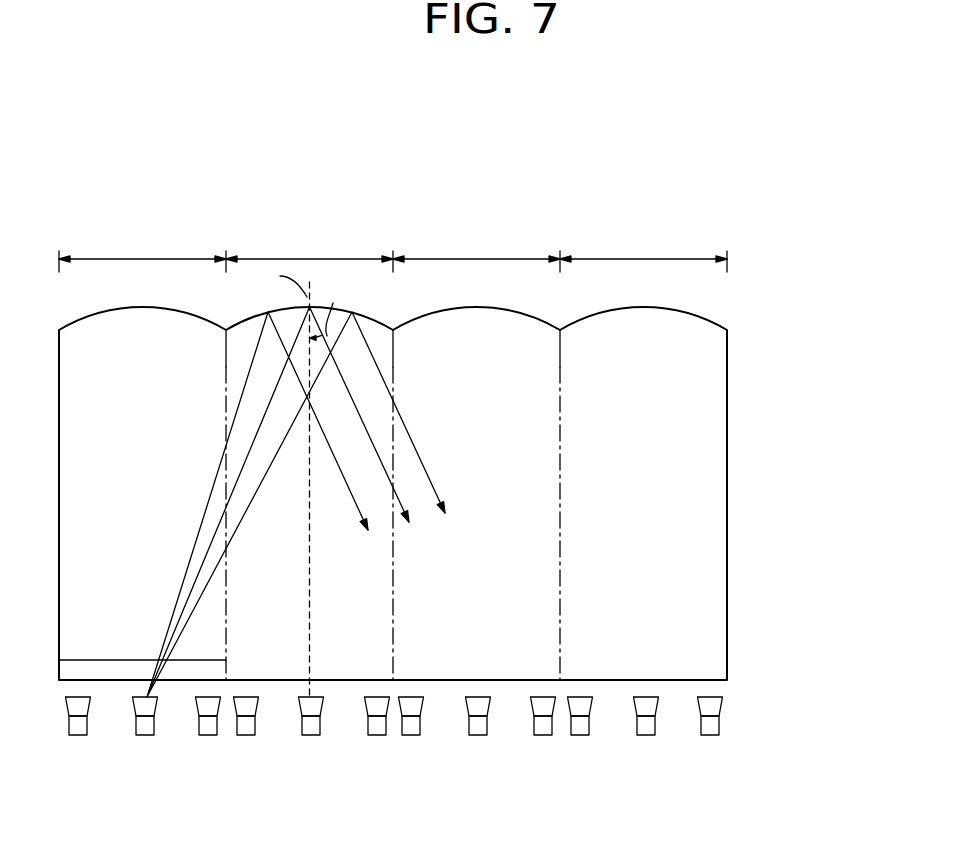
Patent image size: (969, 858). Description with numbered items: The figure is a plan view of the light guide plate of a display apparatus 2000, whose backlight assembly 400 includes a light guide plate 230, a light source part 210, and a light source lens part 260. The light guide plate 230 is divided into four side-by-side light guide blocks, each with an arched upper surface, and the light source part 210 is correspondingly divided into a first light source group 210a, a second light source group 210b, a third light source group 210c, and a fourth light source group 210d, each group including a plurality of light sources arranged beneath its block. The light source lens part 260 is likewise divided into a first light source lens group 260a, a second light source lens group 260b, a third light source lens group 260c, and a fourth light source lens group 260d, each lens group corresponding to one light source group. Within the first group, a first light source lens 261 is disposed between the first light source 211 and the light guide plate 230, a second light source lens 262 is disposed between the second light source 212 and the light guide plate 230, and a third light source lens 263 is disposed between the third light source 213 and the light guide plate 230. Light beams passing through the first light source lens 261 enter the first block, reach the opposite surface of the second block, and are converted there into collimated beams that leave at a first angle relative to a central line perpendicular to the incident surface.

The display apparatus 2000 is at (316, 182).
The backlight assembly 400 is at (806, 652).
The light guide plate 230 is at (728, 666).
The light source lens part 260 is at (724, 716).
The light source part 210 is at (724, 716).
The first light source lens group 260a is at (220, 623).
The second light source lens group 260b is at (387, 623).
The third light source lens group 260c is at (554, 623).
The fourth light source lens group 260d is at (721, 623).
The first light source lens 261 is at (147, 697).
The second light source lens 262 is at (79, 697).
The third light source lens 263 is at (210, 697).
The first light source group 210a is at (220, 795).
The second light source group 210b is at (387, 795).
The third light source group 210c is at (554, 795).
The fourth light source group 210d is at (721, 795).
The first light source 211 is at (145, 735).
The second light source 212 is at (77, 735).
The third light source 213 is at (208, 735).